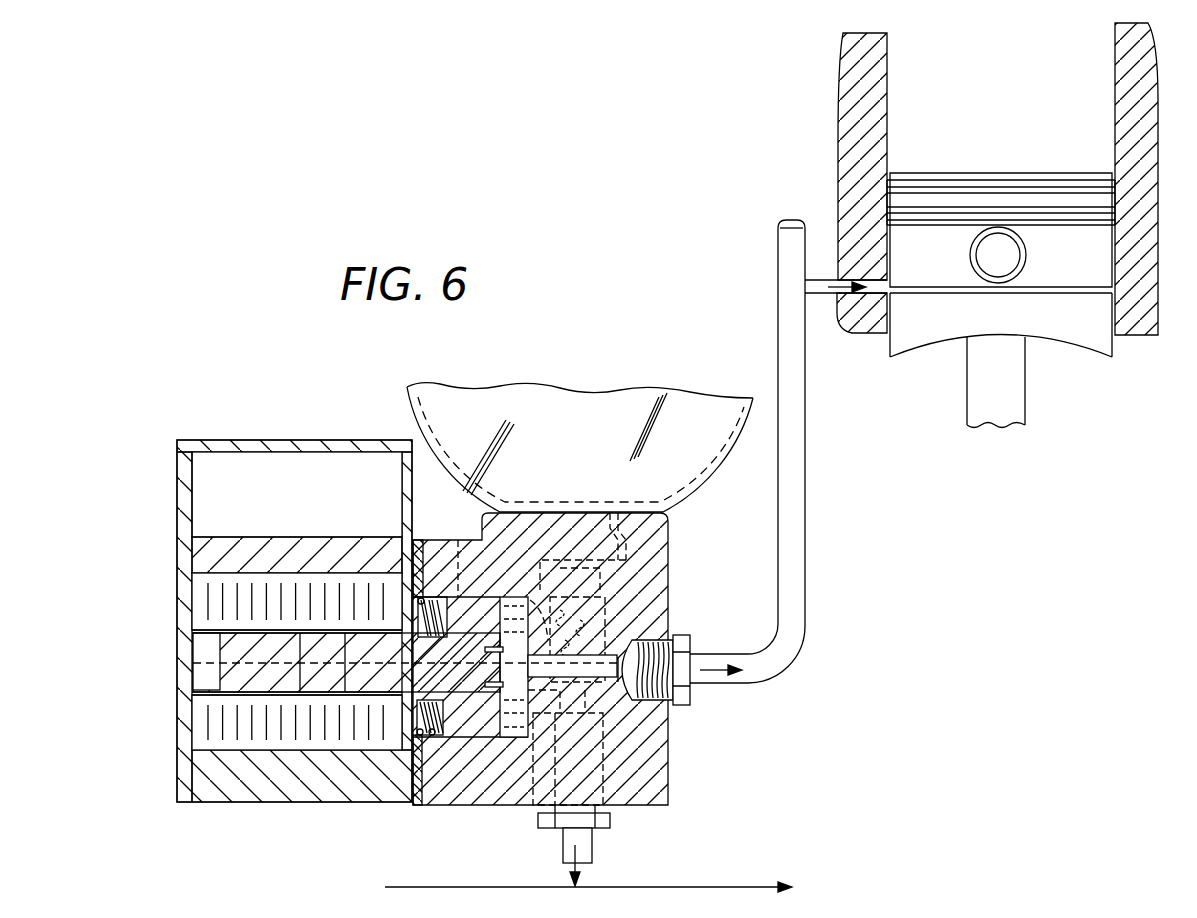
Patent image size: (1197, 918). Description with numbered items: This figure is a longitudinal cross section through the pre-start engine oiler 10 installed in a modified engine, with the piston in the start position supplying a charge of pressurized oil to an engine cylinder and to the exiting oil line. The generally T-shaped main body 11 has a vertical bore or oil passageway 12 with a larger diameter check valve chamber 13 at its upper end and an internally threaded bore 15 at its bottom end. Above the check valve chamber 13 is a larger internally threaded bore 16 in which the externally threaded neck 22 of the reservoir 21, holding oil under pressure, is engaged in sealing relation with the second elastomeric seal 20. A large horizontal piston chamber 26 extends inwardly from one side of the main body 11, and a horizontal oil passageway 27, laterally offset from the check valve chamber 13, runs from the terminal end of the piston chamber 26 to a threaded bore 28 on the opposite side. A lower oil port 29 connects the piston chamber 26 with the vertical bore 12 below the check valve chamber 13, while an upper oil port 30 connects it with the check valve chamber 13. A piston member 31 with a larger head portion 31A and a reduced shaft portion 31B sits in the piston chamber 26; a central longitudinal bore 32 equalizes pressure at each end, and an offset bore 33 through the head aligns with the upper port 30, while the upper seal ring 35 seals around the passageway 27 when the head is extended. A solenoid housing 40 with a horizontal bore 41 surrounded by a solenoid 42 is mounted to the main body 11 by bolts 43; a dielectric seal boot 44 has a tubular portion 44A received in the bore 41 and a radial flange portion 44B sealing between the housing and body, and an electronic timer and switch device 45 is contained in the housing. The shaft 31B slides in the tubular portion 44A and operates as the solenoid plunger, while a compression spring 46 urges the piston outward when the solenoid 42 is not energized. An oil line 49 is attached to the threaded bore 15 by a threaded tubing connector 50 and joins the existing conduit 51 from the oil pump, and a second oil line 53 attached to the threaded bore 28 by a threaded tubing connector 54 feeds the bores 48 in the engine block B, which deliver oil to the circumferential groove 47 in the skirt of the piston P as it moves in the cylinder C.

The pre-start engine oiler 10 is at (569, 352).
The main body 11 is at (668, 752).
The vertical bore or oil passageway 12 is at (600, 735).
The check valve chamber 13 is at (603, 578).
The internally threaded bore 15 is at (610, 820).
The internally threaded bore 16 is at (672, 522).
The second elastomeric seal 20 is at (637, 563).
The reservoir 21 is at (660, 395).
The externally threaded neck 22 is at (614, 536).
The piston chamber 26 is at (523, 745).
The horizontal bore or oil passageway 27 is at (612, 655).
The threaded bore 28 is at (632, 694).
The lower horizontal bore or oil port 29 is at (540, 760).
The upper horizontal bore or oil port 30 is at (540, 595).
The piston member 31 is at (303, 675).
The head portion 31A is at (455, 737).
The shaft portion 31B is at (348, 688).
The central longitudinal bore 32 is at (180, 664).
The bore 33 is at (462, 555).
The seal ring 35 is at (487, 700).
The solenoid housing 40 is at (332, 440).
The horizontal bore 41 is at (192, 628).
The solenoid 42 is at (202, 603).
The bolts 43 is at (177, 562).
The seal boot 44 is at (230, 712).
The tubular portion 44A is at (253, 697).
The radial flange portion 44B is at (412, 800).
The electronic timer and switch device 45 is at (195, 503).
The compression spring 46 is at (428, 600).
The circumferential groove 47 is at (888, 290).
The bores 48 is at (792, 207).
The oil line 49 is at (592, 843).
The threaded tubing connector 50 is at (610, 822).
The existing conduit 51 is at (693, 887).
The second oil line 53 is at (787, 312).
The threaded tubing connector 54 is at (690, 634).
The engine block B is at (840, 146).
The cylinder C is at (892, 112).
The piston P is at (1003, 140).